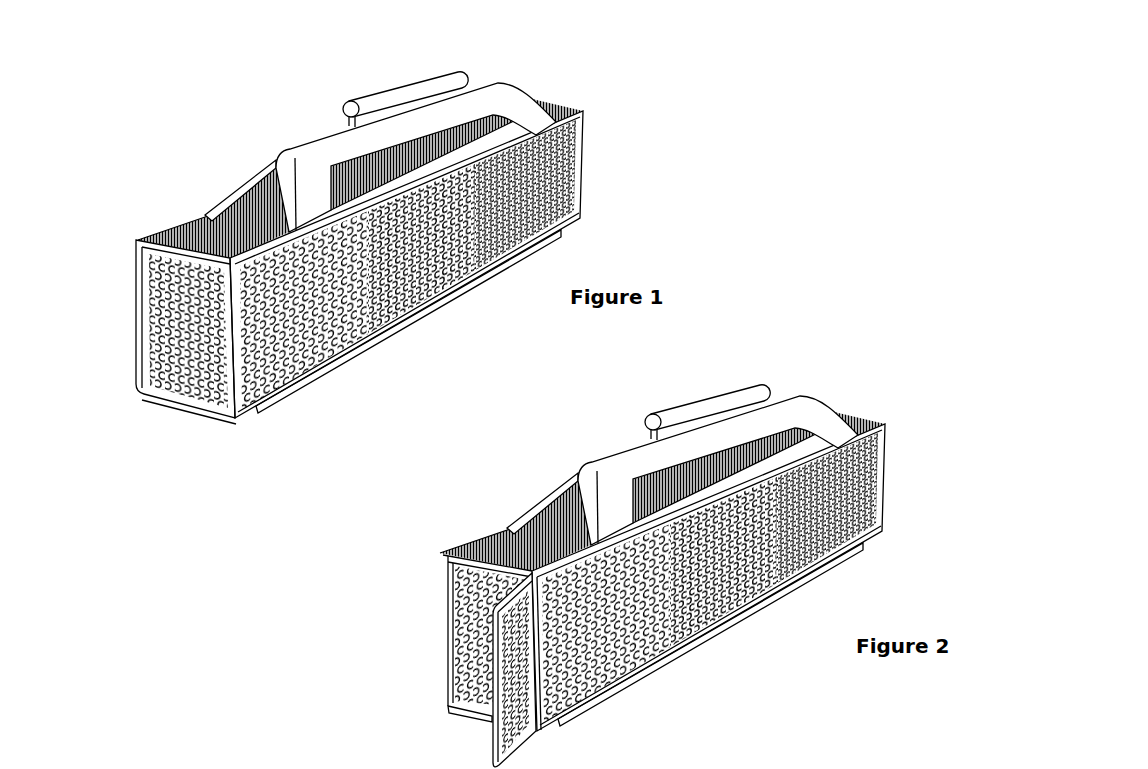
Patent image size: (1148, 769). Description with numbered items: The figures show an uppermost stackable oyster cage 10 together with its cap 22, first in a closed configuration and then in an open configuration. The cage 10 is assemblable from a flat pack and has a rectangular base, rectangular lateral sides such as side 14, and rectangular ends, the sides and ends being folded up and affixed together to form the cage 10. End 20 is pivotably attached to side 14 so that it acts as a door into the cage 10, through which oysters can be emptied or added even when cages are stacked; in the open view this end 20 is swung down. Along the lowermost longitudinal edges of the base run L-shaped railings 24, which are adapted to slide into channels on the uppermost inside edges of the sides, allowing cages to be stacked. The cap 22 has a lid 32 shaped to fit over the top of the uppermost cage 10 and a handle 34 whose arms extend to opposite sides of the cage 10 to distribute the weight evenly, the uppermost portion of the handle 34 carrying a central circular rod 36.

In FIG. 1, the cage 10 is at (412, 266).
In FIG. 2, the cage 10 is at (704, 524).
In FIG. 1, the lateral side 14 is at (352, 268).
In FIG. 1, the end 20 is at (152, 343).
In FIG. 2, the end 20 is at (507, 678).
In FIG. 1, the cap 22 is at (346, 125).
In FIG. 1, the L-shaped railing 24 is at (292, 388).
In FIG. 2, the L-shaped railing 24 is at (838, 563).
In FIG. 1, the lid 32 is at (202, 224).
In FIG. 1, the handle 34 is at (292, 162).
In FIG. 1, the circular rod 36 is at (373, 95).